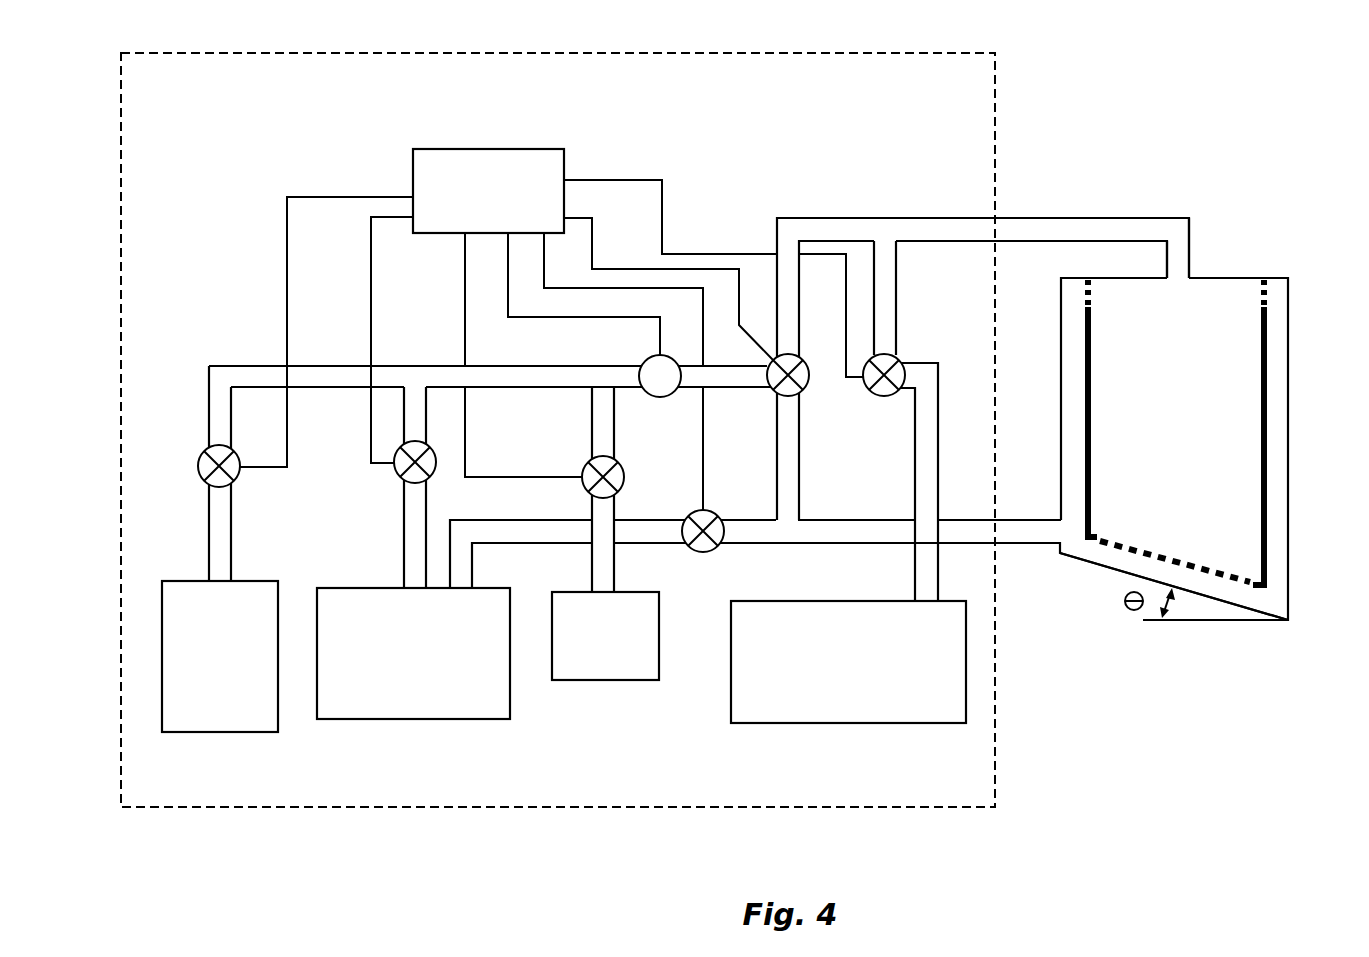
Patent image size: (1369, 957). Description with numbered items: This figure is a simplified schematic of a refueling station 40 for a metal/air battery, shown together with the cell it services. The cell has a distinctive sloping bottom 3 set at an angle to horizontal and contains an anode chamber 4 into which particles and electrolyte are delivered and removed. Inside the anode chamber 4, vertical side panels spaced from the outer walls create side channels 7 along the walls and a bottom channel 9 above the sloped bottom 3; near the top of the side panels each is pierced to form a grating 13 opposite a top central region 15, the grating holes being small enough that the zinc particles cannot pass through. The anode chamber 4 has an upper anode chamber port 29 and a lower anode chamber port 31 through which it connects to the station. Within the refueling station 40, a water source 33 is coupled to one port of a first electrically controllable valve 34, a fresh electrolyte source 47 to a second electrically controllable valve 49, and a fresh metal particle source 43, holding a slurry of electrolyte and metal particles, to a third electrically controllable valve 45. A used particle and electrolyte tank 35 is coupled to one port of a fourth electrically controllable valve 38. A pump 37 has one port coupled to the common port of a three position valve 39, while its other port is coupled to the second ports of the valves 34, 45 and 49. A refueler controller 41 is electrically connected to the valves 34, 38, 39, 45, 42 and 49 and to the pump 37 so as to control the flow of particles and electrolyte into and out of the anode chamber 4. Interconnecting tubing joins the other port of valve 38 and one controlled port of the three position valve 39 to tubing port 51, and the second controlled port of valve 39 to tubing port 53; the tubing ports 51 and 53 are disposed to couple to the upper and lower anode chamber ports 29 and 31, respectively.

The sloping bottom 3 is at (1122, 572).
The anode chamber 4 is at (1185, 411).
The side channels 7 is at (1086, 460).
The bottom channel 9 is at (1216, 585).
The grating 13 is at (1086, 303).
The top central region 15 is at (1198, 342).
The upper anode chamber port 29 is at (1189, 230).
The lower anode chamber port 31 is at (1013, 543).
The water source 33 is at (592, 680).
The first electrically controllable valve 34 is at (625, 478).
The used particle and electrolyte tank 35 is at (810, 723).
The pump 37 is at (650, 358).
The fourth electrically controllable valve 38 is at (895, 357).
The three position valve 39 is at (808, 383).
The refueling station 40 is at (995, 695).
The refueler controller 41 is at (490, 148).
The valve 42 is at (700, 550).
The fresh metal particle source 43 is at (207, 732).
The third electrically controllable valve 45 is at (200, 466).
The fresh electrolyte source 47 is at (370, 720).
The second electrically controllable valve 49 is at (398, 476).
The tubing port 51 is at (863, 218).
The tubing port 53 is at (967, 545).